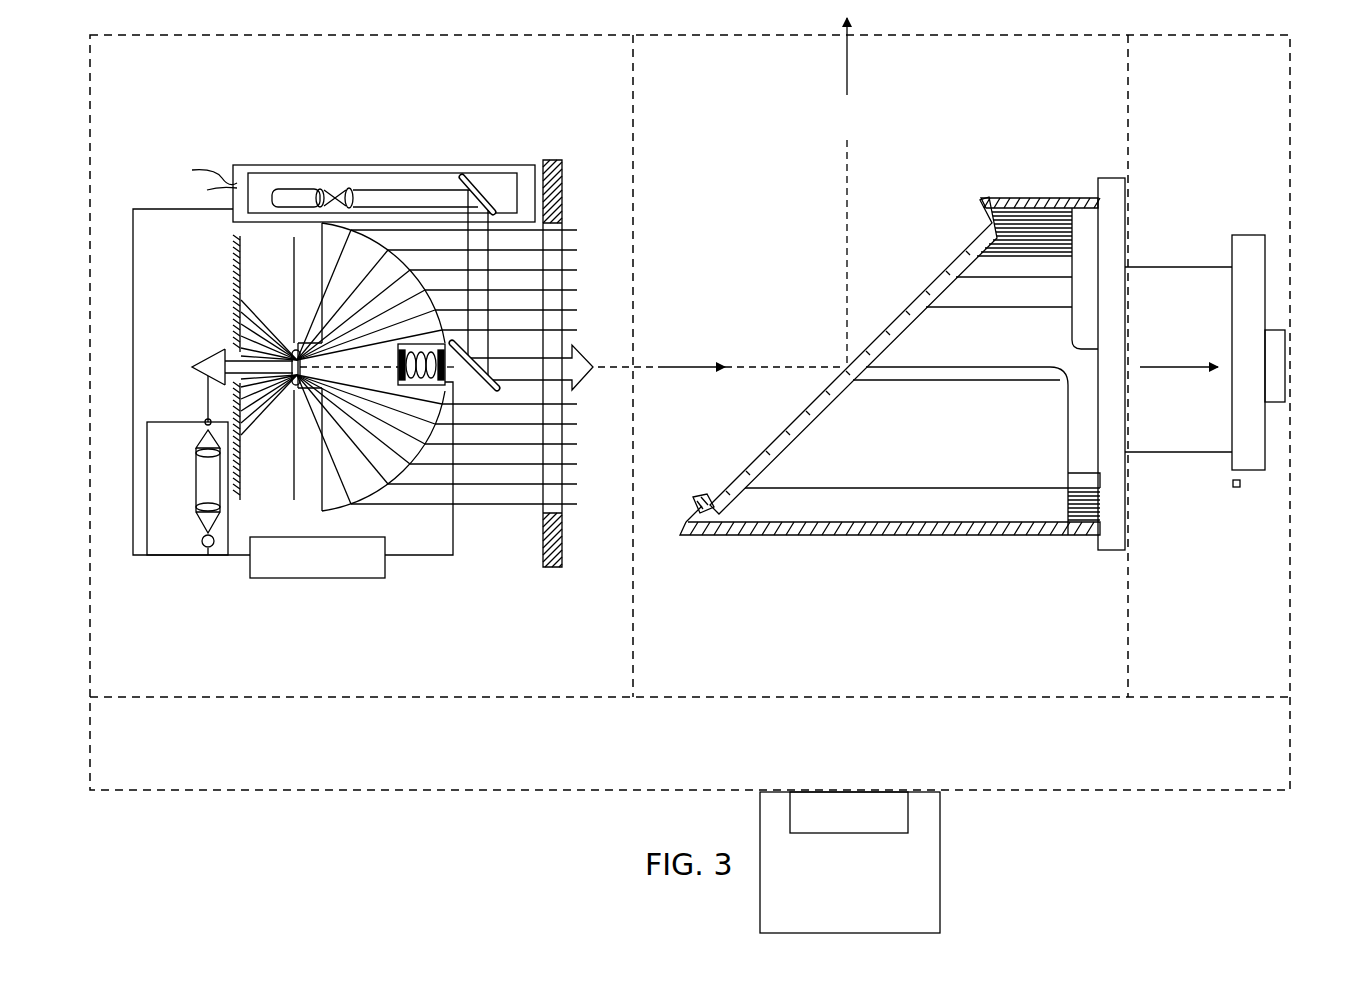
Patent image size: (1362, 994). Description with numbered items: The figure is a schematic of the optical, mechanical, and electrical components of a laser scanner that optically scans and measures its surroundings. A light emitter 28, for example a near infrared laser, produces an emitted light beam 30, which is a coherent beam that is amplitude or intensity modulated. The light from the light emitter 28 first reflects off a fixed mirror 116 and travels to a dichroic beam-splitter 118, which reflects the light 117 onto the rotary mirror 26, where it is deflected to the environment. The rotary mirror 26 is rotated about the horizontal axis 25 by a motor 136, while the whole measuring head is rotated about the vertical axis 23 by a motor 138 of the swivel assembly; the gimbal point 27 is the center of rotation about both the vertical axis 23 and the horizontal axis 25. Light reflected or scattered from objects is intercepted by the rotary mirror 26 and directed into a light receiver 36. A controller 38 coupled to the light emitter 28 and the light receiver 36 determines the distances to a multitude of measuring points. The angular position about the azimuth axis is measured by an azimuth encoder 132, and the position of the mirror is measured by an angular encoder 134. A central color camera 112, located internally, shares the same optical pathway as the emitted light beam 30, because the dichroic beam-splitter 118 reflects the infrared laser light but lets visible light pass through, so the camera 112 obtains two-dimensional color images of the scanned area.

The vertical axis 23 is at (852, 72).
The horizontal axis 25 is at (1150, 365).
The rotary mirror 26 is at (950, 258).
The gimbal point 27 is at (845, 362).
The light emitter 28 is at (292, 188).
The emitted light beam 30 is at (664, 360).
The light receiver 36 is at (170, 489).
The controller 38 is at (327, 578).
The central color camera 112 is at (425, 390).
The fixed mirror 116 is at (485, 178).
The light 117 is at (478, 265).
The dichroic beam-splitter 118 is at (484, 386).
The azimuth encoder 132 is at (908, 818).
The angular encoder 134 is at (1286, 365).
The motor 136 is at (1253, 473).
The motor 138 is at (940, 915).